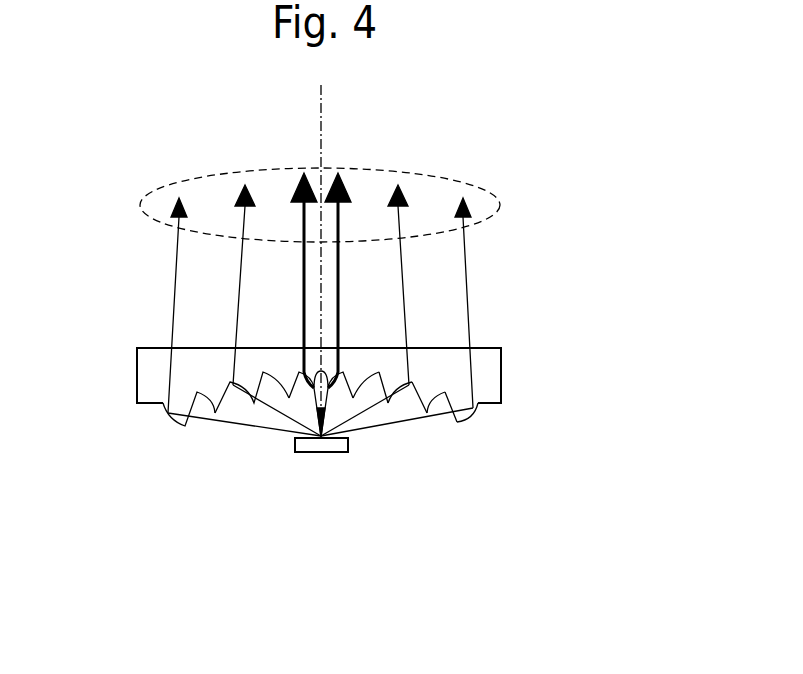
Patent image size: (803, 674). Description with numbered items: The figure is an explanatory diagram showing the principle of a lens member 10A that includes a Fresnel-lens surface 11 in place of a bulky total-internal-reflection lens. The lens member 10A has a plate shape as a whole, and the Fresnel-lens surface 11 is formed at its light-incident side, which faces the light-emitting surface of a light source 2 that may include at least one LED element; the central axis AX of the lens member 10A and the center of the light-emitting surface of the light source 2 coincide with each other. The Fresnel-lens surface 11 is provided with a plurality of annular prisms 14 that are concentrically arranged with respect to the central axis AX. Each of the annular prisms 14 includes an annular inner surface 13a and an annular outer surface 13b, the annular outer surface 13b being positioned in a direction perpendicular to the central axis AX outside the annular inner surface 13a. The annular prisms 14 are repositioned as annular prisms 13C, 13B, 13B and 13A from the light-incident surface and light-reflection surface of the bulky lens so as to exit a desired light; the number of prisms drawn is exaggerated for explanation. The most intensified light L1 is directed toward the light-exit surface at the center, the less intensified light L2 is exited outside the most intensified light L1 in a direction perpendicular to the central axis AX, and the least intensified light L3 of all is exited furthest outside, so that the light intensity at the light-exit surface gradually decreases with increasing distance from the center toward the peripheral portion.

The lens member 10A is at (517, 378).
The light source 2 is at (323, 452).
The Fresnel-lens surface 11 is at (378, 410).
The annular prism 13A is at (302, 433).
The annular prism 13B is at (247, 408).
The annular prism 13C is at (178, 428).
The annular inner surface 13a is at (407, 417).
The annular outer surface 13b is at (438, 414).
The annular prisms 14 is at (220, 474).
The central axis AX is at (322, 97).
The most intensified light L1 is at (303, 220).
The less intensified light L2 is at (242, 216).
The least intensified light L3 is at (178, 253).